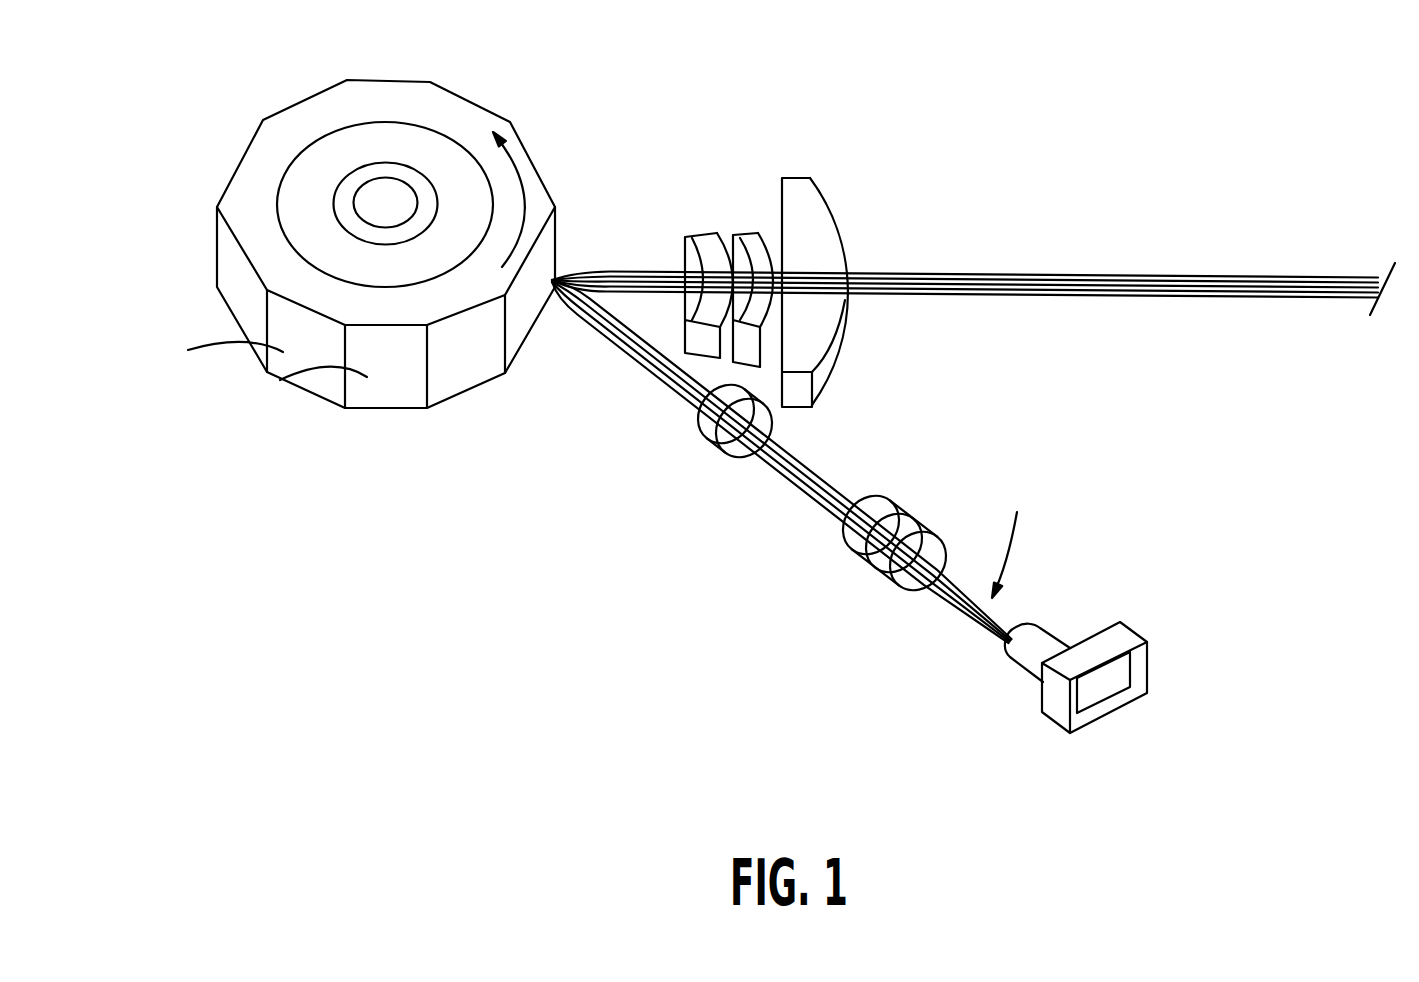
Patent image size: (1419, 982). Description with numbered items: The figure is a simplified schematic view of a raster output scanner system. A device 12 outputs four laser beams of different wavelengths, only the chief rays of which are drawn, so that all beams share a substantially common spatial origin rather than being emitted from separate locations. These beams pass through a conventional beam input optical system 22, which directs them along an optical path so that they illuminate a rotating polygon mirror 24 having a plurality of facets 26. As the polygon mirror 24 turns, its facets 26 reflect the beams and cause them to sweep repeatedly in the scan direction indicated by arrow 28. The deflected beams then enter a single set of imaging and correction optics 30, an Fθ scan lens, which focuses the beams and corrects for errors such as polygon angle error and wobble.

The device 12 is at (1145, 621).
The beam input optical system 22 is at (848, 566).
The rotating polygon mirror 24 is at (472, 88).
The facets 26 is at (287, 378).
The arrow 28 is at (1157, 267).
The imaging and correction optics 30 is at (796, 180).